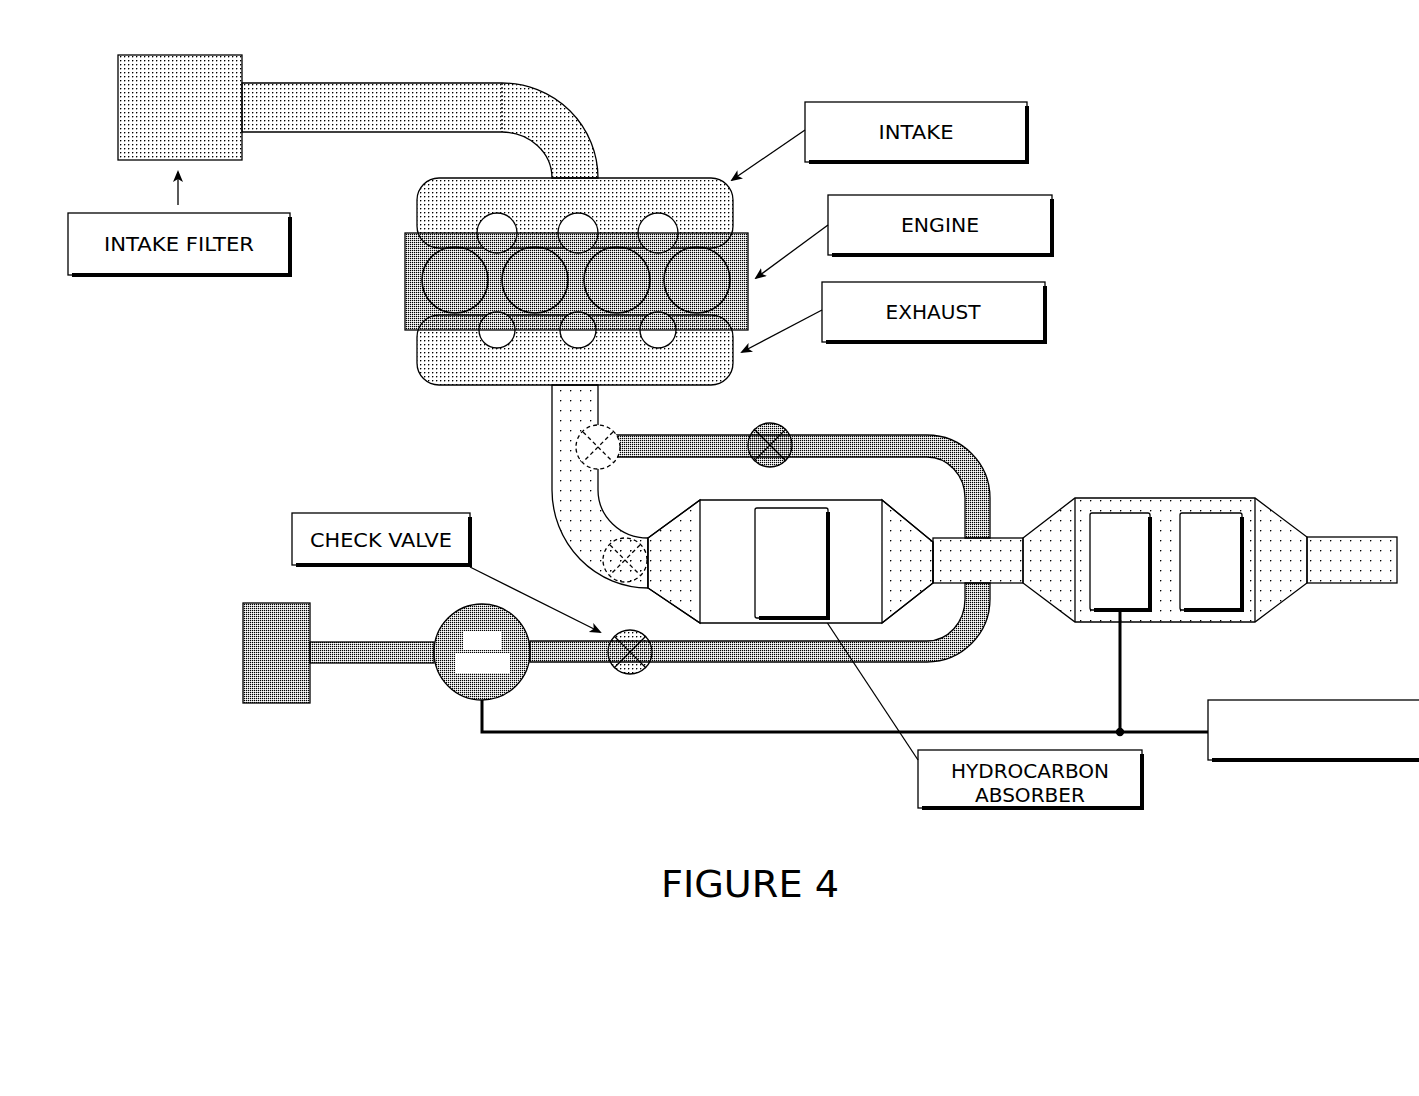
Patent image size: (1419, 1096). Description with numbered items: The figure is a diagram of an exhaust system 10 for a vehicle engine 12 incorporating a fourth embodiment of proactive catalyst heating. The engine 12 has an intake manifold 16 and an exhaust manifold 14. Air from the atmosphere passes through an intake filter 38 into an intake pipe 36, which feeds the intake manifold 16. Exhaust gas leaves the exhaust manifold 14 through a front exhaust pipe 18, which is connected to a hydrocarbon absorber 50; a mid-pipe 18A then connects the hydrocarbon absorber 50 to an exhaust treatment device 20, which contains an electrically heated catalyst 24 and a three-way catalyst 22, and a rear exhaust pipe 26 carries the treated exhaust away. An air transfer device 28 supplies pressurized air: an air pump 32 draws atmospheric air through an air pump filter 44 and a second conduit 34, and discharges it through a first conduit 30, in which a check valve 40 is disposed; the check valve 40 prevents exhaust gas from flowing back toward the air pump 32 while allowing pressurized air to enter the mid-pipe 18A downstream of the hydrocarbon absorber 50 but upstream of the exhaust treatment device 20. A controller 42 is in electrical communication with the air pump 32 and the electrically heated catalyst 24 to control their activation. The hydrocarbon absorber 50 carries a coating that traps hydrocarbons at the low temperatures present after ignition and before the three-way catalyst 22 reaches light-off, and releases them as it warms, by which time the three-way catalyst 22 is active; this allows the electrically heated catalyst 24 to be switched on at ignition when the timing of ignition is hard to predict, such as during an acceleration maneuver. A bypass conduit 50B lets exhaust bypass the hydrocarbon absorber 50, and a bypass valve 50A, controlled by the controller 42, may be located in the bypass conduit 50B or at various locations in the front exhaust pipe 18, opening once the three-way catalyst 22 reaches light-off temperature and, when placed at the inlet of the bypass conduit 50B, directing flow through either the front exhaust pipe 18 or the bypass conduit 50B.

The exhaust system 10 is at (1112, 172).
The engine 12 is at (378, 270).
The exhaust manifold 14 is at (504, 388).
The intake manifold 16 is at (645, 178).
The front exhaust pipe 18 is at (583, 540).
The mid-pipe 18A is at (1003, 588).
The exhaust treatment device 20 is at (1290, 482).
The three-way catalyst 22 is at (1213, 613).
The electrically heated catalyst 24 is at (1133, 613).
The rear exhaust pipe 26 is at (1352, 586).
The air transfer device 28 is at (440, 712).
The first conduit 30 is at (792, 666).
The air pump 32 is at (508, 690).
The second conduit 34 is at (377, 666).
The intake pipe 36 is at (372, 133).
The intake filter 38 is at (118, 106).
The check valve 40 is at (632, 676).
The controller 42 is at (1325, 762).
The air pump filter 44 is at (243, 655).
The hydrocarbon absorber 50 is at (757, 563).
The bypass valve 50A is at (608, 428).
The bypass conduit 50B is at (880, 434).